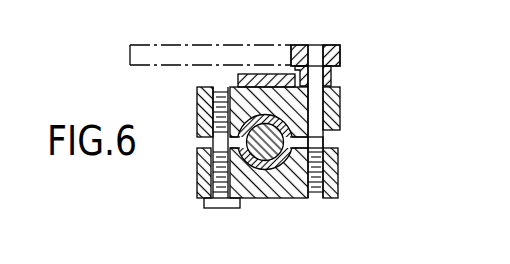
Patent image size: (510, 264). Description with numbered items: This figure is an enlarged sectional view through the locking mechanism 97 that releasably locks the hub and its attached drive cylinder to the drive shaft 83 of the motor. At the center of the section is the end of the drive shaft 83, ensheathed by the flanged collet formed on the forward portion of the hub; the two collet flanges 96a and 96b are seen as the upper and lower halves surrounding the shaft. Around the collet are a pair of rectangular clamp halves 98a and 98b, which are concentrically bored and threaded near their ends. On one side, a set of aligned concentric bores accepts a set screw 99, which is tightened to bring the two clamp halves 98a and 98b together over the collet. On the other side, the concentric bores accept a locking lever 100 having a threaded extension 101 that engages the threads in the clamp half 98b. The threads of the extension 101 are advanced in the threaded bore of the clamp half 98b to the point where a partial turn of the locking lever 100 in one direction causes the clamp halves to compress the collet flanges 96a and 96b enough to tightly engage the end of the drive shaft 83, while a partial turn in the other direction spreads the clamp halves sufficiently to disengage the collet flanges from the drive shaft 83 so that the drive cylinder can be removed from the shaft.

The locking lever 100 is at (201, 44).
The locking mechanism 97 is at (348, 125).
The clamp half 98a is at (341, 106).
The clamp half 98b is at (339, 181).
The threaded extension 101 is at (323, 142).
The collet flange 96a is at (278, 170).
The collet flange 96b is at (226, 101).
The drive shaft 83 is at (265, 158).
The set screw 99 is at (220, 172).